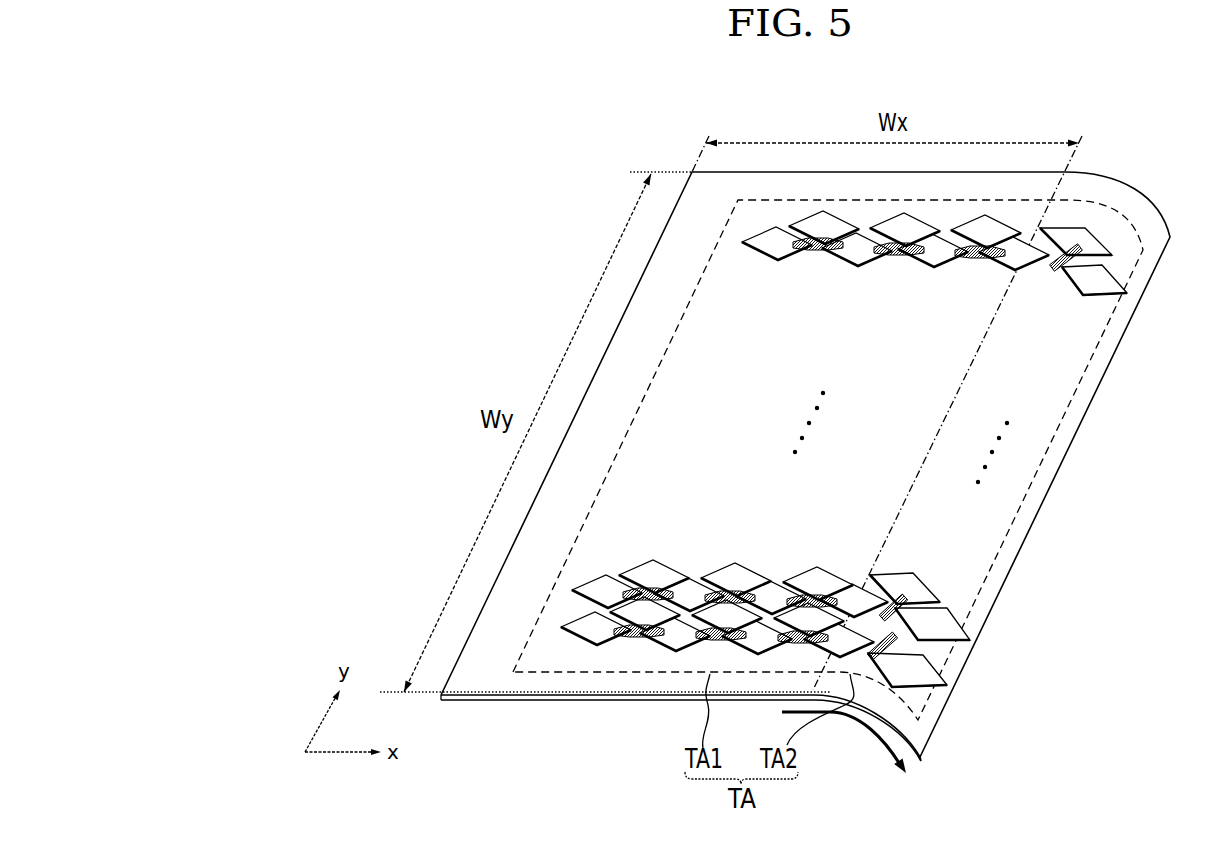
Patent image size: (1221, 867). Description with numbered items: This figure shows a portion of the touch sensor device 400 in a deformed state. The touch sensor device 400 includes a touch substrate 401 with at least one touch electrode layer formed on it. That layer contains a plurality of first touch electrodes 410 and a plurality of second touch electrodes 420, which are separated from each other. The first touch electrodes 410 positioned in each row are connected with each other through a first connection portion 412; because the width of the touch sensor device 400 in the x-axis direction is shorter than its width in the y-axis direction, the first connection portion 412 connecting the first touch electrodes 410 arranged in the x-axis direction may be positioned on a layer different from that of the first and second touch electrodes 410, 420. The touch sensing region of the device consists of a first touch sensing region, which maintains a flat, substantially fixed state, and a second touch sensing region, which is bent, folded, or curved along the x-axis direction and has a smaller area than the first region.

The touch sensor device 400 is at (992, 118).
The touch substrate 401 is at (641, 340).
The first touch electrode 410 is at (767, 243).
The first connection portion 412 is at (815, 250).
The second touch electrode 420 is at (813, 227).